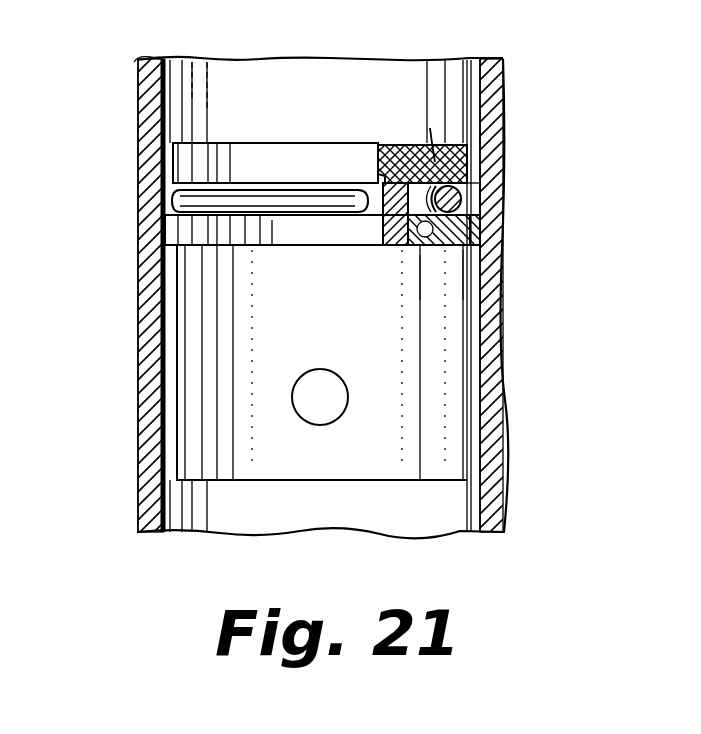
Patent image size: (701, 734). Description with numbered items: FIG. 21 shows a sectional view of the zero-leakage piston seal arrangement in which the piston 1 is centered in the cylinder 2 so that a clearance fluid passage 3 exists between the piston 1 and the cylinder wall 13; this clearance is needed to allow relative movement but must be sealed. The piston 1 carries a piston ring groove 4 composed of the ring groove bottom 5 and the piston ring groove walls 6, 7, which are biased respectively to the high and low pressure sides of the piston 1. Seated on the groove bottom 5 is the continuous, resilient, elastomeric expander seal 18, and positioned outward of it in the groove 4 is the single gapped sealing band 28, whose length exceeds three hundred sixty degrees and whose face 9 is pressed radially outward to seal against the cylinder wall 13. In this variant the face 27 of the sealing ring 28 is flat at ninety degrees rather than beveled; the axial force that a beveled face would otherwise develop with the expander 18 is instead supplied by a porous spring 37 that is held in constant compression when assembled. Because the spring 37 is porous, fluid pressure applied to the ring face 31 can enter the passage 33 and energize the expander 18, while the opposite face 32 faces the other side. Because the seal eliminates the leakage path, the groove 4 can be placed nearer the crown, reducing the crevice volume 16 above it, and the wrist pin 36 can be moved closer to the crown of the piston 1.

The piston 1 is at (338, 354).
The cylinder 2 is at (248, 80).
The fluid passage 3 is at (475, 460).
The piston ring groove 4 is at (385, 220).
The ring groove bottom 5 is at (380, 172).
The piston ring groove wall 6 is at (420, 175).
The piston ring groove wall 7 is at (463, 250).
The sealing band face 9 is at (481, 222).
The cylinder wall 13 is at (140, 114).
The crevice volume 16 is at (484, 140).
The expander seal 18 is at (395, 245).
The face 27 is at (420, 255).
The gapped sealing band 28 is at (470, 240).
The face 31 is at (480, 212).
The face 32 is at (470, 248).
The passage 33 is at (480, 195).
The wrist pin 36 is at (336, 413).
The porous spring 37 is at (439, 127).